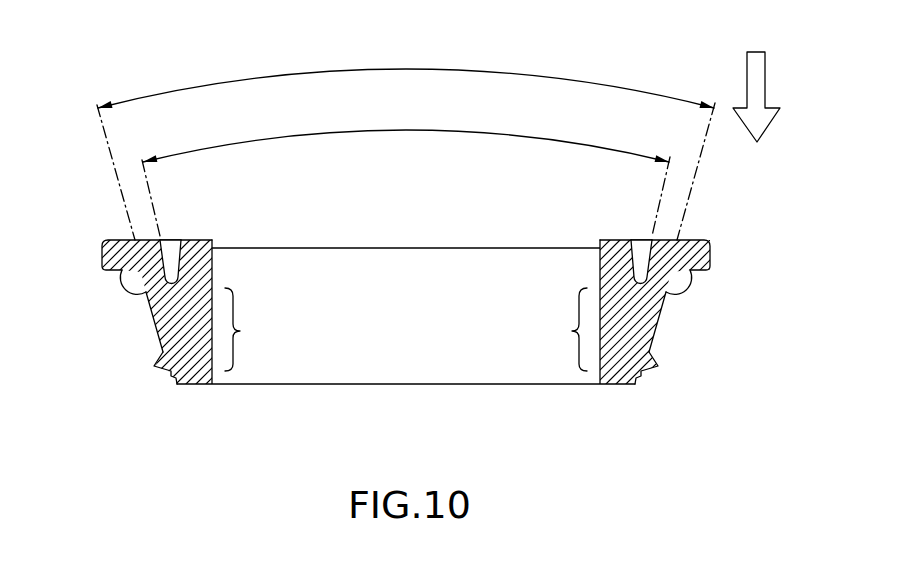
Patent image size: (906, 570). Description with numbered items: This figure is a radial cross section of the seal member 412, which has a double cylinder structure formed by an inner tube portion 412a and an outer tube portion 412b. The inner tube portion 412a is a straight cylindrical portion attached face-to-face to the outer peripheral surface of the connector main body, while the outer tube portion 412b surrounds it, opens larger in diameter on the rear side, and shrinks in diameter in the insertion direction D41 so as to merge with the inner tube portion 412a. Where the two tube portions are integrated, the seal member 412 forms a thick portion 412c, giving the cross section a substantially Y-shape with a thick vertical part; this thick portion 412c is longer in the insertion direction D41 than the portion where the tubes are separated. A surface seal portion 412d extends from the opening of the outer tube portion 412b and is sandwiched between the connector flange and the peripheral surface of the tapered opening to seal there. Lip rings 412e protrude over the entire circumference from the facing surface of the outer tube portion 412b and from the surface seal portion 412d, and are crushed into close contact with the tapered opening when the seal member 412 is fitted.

The seal member 412 is at (409, 399).
The inner tube portion 412a is at (230, 217).
The outer tube portion 412b is at (157, 325).
The thick portion 412c is at (241, 331).
The surface seal portion 412d is at (102, 254).
The lip ring 412e is at (128, 288).
The insertion direction D41 is at (747, 80).